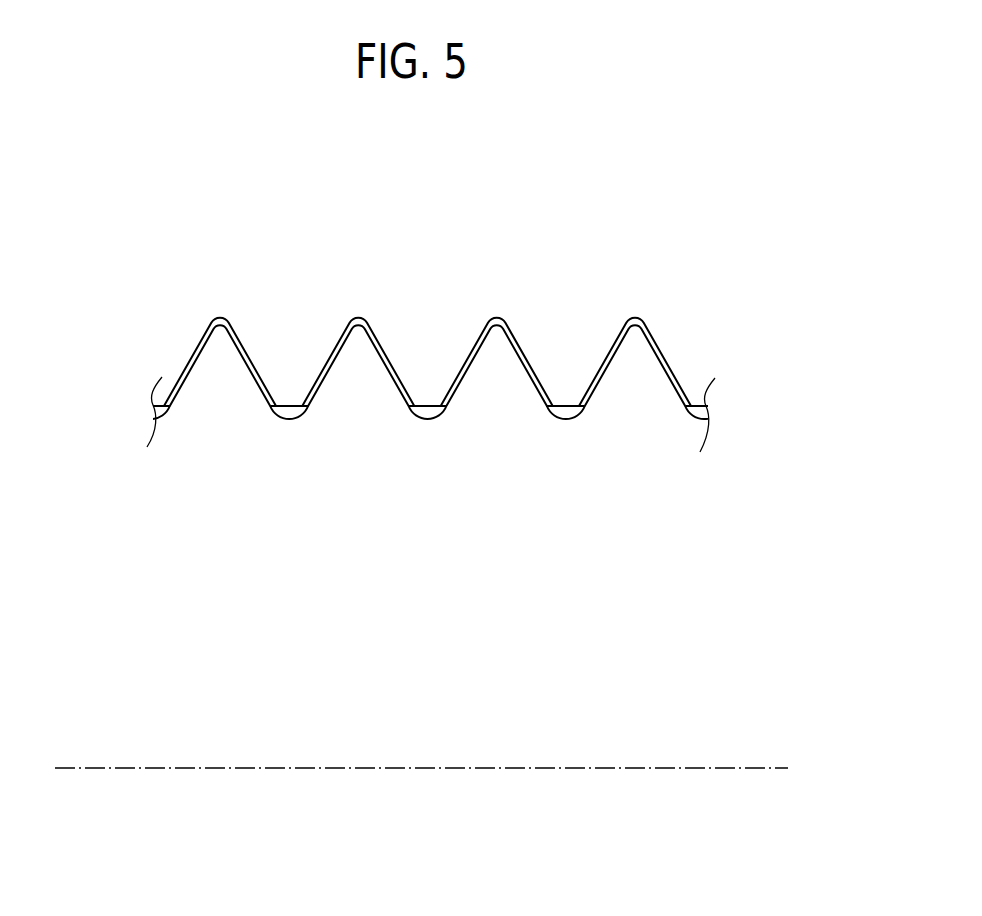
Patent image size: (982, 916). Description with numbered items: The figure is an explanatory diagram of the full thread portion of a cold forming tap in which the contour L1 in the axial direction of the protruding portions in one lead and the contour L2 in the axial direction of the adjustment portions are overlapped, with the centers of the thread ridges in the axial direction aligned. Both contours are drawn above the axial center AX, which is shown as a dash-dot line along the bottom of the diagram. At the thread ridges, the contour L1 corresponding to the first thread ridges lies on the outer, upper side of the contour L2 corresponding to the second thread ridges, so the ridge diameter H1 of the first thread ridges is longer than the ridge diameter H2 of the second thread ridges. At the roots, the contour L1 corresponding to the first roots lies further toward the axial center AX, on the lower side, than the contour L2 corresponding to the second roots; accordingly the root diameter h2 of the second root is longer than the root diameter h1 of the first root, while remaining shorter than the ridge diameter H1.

The contour of the protruding portions L1 is at (234, 330).
The contour of the adjustment portions L2 is at (248, 355).
The ridge diameter of the first thread ridges H1 is at (358, 318).
The ridge diameter of the second thread ridges H2 is at (497, 326).
The root diameter of the first root h1 is at (293, 419).
The root diameter of the second root h2 is at (272, 406).
The axial center AX is at (436, 774).